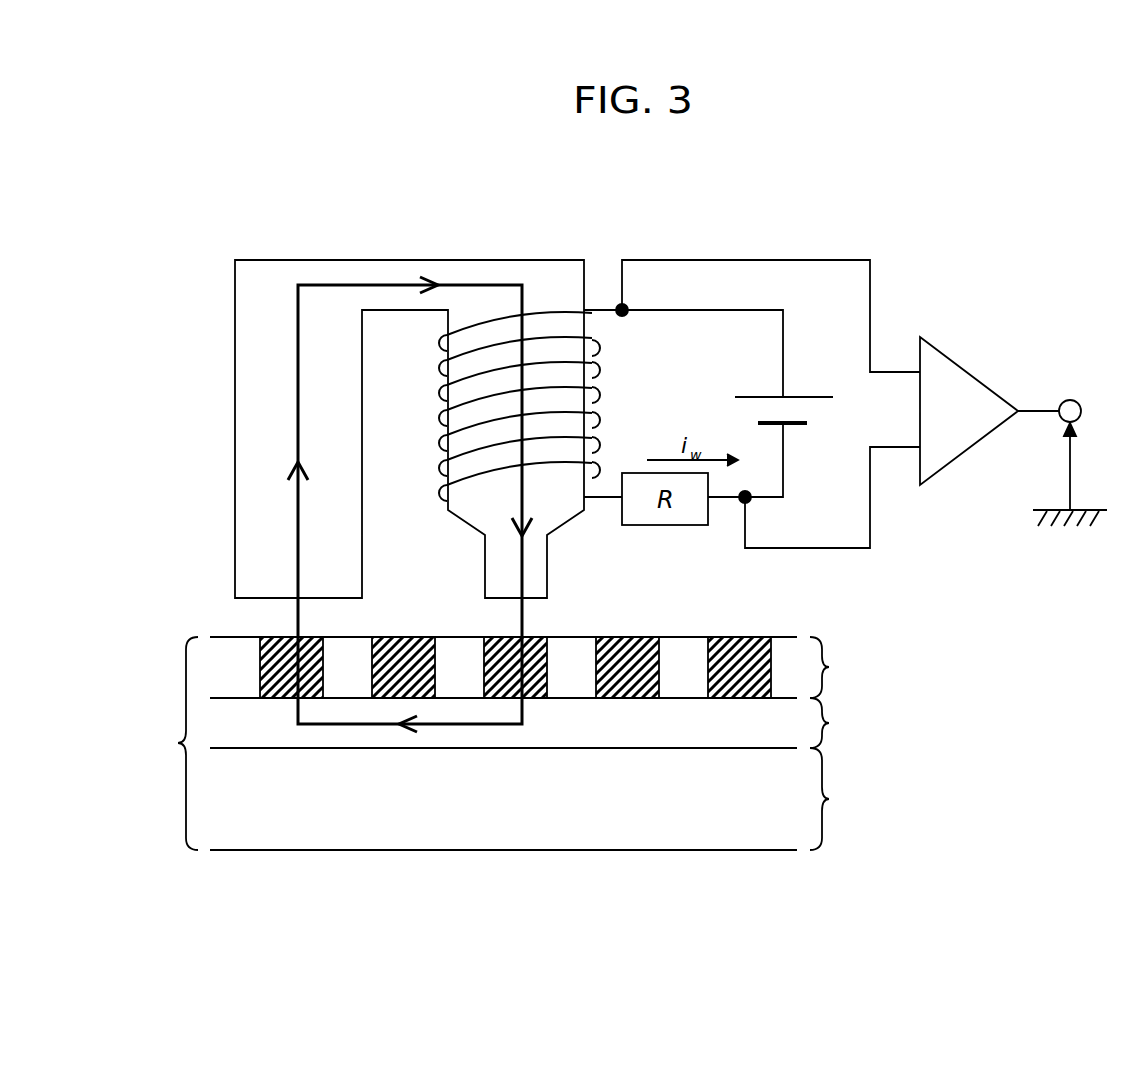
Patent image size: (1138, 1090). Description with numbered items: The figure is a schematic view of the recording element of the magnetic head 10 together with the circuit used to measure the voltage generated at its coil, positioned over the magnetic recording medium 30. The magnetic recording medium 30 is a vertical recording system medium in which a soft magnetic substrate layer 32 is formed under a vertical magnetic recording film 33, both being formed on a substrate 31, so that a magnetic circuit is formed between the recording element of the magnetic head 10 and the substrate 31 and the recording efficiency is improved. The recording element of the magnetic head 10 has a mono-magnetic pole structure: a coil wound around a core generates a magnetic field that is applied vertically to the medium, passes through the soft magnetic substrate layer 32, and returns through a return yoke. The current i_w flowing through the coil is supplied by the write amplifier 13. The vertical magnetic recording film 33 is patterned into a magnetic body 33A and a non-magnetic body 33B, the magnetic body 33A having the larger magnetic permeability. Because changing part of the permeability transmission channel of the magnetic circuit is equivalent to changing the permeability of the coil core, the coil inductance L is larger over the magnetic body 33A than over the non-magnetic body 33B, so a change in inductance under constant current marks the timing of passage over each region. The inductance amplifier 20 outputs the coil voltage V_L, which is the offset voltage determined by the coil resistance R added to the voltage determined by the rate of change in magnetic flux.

The magnetic head 10 is at (398, 259).
The write amplifier 13 is at (798, 397).
The inductance amplifier 20 is at (975, 372).
The magnetic recording medium 30 is at (178, 742).
The substrate 31 is at (829, 799).
The soft magnetic substrate layer 32 is at (829, 723).
The vertical magnetic recording film 33 is at (674, 645).
The magnetic body 33A is at (755, 651).
The non-magnetic body 33B is at (672, 650).